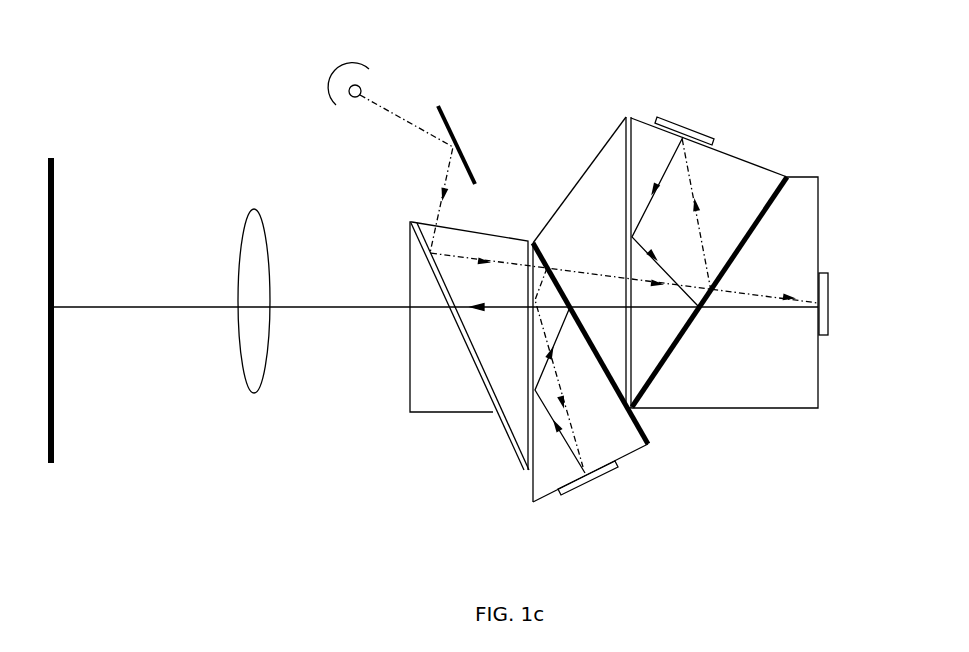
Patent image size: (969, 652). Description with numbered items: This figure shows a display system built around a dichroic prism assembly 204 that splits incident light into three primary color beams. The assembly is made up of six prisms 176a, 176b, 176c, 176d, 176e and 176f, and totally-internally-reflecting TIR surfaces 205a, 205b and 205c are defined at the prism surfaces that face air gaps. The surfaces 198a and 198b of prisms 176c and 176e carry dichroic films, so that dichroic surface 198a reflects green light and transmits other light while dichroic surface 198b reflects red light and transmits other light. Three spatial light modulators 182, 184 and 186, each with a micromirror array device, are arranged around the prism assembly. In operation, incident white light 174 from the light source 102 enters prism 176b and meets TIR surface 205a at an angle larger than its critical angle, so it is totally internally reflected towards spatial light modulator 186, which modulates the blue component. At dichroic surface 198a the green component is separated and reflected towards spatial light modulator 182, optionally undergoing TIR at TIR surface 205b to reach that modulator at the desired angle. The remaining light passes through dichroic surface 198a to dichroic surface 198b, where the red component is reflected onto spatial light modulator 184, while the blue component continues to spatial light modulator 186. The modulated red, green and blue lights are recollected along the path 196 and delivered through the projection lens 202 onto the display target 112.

The display target 112 is at (53, 180).
The projection lens 202 is at (254, 208).
The optical axis / light path 196 is at (365, 304).
The light source 102 is at (375, 54).
The incident white light 174 is at (410, 153).
The dichroic prism assembly 204 is at (610, 133).
The prism 176a is at (470, 403).
The prism 176b is at (525, 354).
The prism 176c is at (634, 449).
The prism 176d is at (616, 234).
The prism 176e is at (761, 201).
The prism 176f is at (793, 399).
The TIR surface 205a is at (516, 447).
The TIR surface 205b is at (536, 501).
The TIR surface 205c is at (631, 122).
The dichroic surface 198a is at (650, 433).
The dichroic surface 198b is at (784, 192).
The spatial light modulator 182 is at (629, 506).
The spatial light modulator 184 is at (711, 116).
The spatial light modulator 186 is at (876, 316).